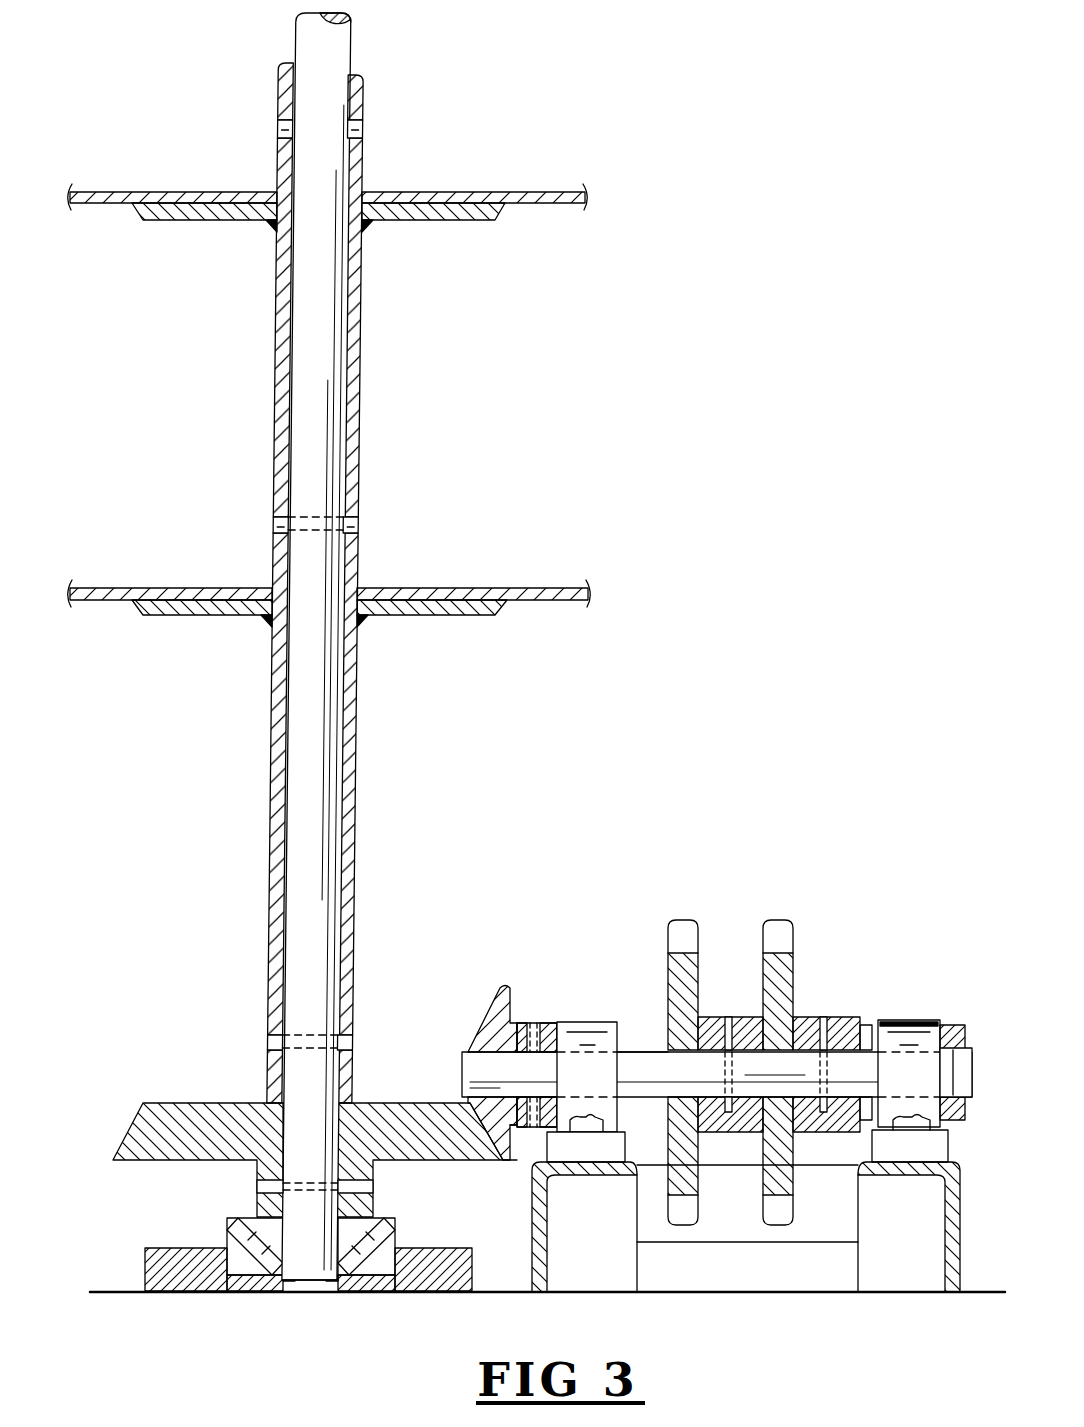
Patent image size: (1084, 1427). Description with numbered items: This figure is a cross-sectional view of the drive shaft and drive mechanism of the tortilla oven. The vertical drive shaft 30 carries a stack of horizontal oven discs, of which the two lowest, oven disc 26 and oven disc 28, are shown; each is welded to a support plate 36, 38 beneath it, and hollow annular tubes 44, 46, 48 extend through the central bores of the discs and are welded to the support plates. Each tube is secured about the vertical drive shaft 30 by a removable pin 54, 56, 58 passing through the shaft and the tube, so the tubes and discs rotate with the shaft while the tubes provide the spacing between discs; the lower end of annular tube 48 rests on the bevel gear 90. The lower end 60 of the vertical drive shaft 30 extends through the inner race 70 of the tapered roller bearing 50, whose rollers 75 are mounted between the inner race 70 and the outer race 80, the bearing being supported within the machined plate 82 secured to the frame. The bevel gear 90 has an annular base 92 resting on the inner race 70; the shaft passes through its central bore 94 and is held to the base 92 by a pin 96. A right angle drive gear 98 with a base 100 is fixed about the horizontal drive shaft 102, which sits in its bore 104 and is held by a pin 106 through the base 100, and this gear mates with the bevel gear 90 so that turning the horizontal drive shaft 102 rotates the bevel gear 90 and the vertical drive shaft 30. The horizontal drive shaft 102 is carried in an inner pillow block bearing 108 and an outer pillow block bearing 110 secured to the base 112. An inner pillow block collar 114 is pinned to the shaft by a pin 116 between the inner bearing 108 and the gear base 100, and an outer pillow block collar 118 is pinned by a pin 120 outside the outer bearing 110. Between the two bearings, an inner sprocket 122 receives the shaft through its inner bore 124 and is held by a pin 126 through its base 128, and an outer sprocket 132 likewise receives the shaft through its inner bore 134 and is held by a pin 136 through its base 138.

The oven disc 26 is at (488, 192).
The oven disc 28 is at (472, 588).
The vertical drive shaft 30 is at (302, 950).
The support plate 36 is at (441, 220).
The support plate 38 is at (443, 615).
The hollow annular tube 44 is at (364, 96).
The hollow annular tube 46 is at (364, 396).
The hollow annular tube 48 is at (364, 800).
The tapered roller bearing 50 is at (414, 1206).
The removable pin 54 is at (279, 112).
The removable pin 56 is at (279, 507).
The removable pin 58 is at (279, 1030).
The lower end of drive shaft 60 is at (308, 1283).
The inner race 70 is at (288, 1282).
The rollers 75 is at (227, 1222).
The outer race 80 is at (248, 1285).
The machined plate 82 is at (165, 1248).
The bevel gear 90 is at (190, 1103).
The annular base 92 is at (257, 1181).
The central bore 94 is at (284, 1131).
The pin 96 is at (373, 1188).
The right angle drive gear 98 is at (492, 1006).
The base of right angle drive gear 100 is at (503, 1160).
The horizontal drive shaft 102 is at (662, 1097).
The bore of right angle drive gear 104 is at (468, 1048).
The pin 106 is at (518, 1023).
The inner pillow block bearing 108 is at (580, 1022).
The outer pillow block bearing 110 is at (898, 1020).
The base 112 is at (560, 1254).
The inner pillow block collar 114 is at (586, 1149).
The pin 116 is at (545, 1023).
The outer pillow block collar 118 is at (958, 1036).
The pin 120 is at (950, 1048).
The inner sprocket 122 is at (683, 920).
The inner bore of inner sprocket 124 is at (668, 1050).
The pin 126 is at (737, 1017).
The base of inner sprocket 128 is at (727, 1132).
The outer sprocket 132 is at (780, 920).
The inner bore of outer sprocket 134 is at (866, 1036).
The pin 136 is at (833, 1017).
The base of outer sprocket 138 is at (823, 1132).